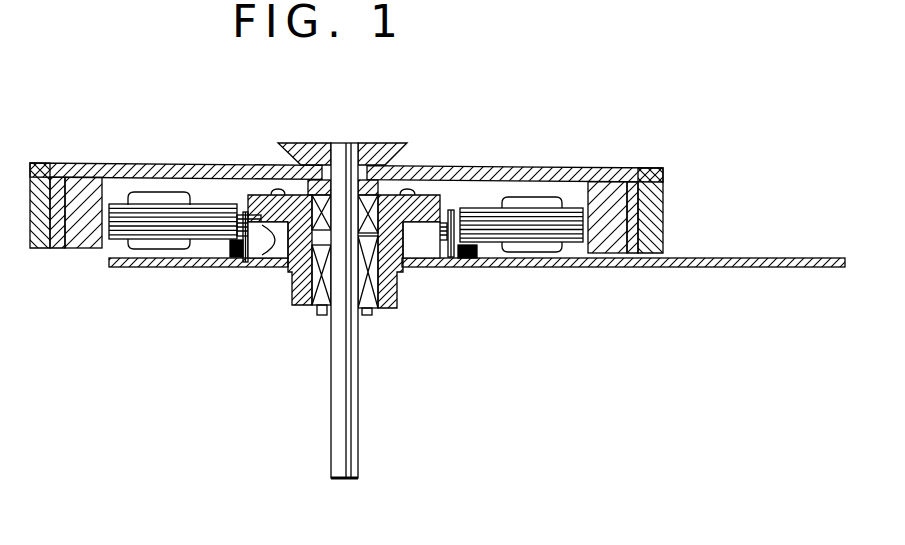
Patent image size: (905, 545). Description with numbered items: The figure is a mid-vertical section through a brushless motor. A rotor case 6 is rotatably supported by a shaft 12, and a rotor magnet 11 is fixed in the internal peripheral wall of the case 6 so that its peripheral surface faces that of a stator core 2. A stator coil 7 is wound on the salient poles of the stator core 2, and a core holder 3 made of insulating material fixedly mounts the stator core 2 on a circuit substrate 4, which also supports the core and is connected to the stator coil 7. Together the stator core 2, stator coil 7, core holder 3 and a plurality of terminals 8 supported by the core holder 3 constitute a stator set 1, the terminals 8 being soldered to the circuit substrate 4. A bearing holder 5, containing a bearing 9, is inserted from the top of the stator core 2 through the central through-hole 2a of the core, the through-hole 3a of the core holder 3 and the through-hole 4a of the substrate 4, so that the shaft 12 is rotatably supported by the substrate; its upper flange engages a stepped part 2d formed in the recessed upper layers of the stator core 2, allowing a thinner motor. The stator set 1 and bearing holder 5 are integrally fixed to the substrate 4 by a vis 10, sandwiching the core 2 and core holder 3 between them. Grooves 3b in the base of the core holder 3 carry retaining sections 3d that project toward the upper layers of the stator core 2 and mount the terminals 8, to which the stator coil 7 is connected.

The stator set 1 is at (481, 200).
The stator core 2 is at (569, 205).
The through-hole 2a is at (263, 260).
The stepped part 2d is at (244, 192).
The core holder 3 is at (183, 267).
The through-hole 3a is at (283, 276).
The groove 3b is at (468, 258).
The retaining section 3d is at (217, 164).
The circuit substrate 4 is at (748, 257).
The through-hole 4a is at (390, 310).
The bearing holder 5 is at (431, 194).
The rotor case 6 is at (624, 167).
The stator coil 7 is at (527, 197).
The terminal 8 is at (452, 258).
The bearing 9 is at (371, 164).
The vis 10 is at (268, 190).
The rotor magnet 11 is at (81, 247).
The shaft 12 is at (340, 428).